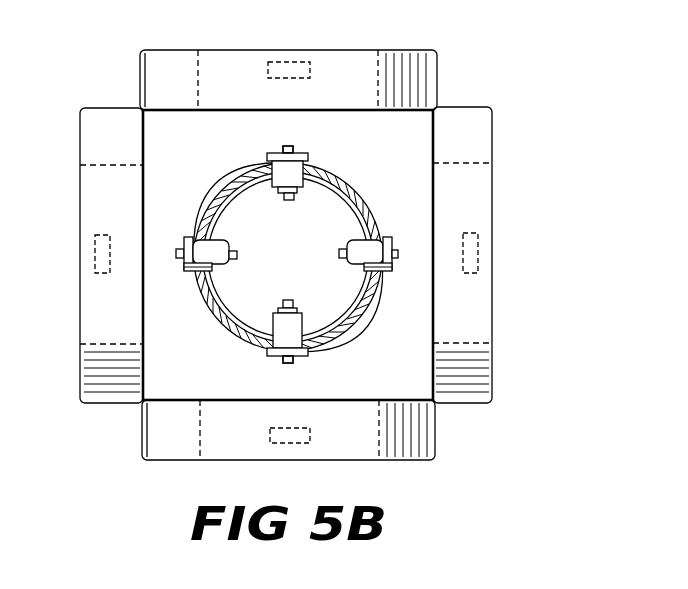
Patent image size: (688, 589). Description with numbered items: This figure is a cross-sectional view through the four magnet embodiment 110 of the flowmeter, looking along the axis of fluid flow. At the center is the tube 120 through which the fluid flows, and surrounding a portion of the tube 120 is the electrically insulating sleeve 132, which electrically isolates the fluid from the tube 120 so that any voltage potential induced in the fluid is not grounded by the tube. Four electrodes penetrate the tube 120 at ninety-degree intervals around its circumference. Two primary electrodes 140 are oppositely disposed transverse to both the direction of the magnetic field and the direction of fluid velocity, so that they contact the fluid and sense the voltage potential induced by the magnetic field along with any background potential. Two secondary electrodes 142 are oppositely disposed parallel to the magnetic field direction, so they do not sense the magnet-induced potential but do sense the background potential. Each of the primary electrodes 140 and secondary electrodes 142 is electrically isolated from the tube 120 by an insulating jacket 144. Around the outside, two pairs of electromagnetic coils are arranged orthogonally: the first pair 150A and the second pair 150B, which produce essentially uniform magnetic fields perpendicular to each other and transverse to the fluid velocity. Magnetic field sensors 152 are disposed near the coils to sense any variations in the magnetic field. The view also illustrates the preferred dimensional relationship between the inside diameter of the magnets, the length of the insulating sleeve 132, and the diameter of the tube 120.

The four magnet embodiment 110 is at (117, 50).
The tube 120 is at (337, 327).
The electrically insulating sleeve 132 is at (356, 302).
The primary electrodes 140 is at (238, 255).
The secondary electrodes 142 is at (283, 149).
The insulating jackets 144 is at (289, 176).
The first pair of electromagnetic coils 150A is at (371, 54).
The second pair of electromagnetic coils 150B is at (92, 333).
The magnetic field sensors 152 is at (283, 54).